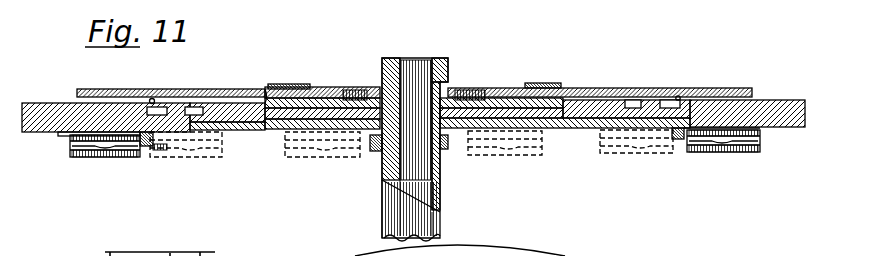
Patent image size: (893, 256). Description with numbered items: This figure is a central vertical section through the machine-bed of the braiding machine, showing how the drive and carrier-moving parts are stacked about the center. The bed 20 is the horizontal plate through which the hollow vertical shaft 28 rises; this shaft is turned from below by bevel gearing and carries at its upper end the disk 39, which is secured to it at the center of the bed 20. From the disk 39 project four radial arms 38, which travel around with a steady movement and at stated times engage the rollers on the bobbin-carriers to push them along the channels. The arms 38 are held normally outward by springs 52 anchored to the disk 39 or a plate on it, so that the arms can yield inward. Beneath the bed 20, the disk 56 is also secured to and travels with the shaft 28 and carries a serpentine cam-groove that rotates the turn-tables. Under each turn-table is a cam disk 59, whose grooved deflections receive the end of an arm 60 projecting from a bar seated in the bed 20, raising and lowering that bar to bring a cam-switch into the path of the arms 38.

The bed 20 is at (33, 112).
The hollow vertical shaft 28 is at (393, 199).
The arms 38 is at (202, 92).
The disk 39 is at (360, 104).
The springs 52 is at (543, 83).
The disk 56 is at (270, 129).
The cam disk 59 is at (70, 150).
The arm 60 is at (157, 149).